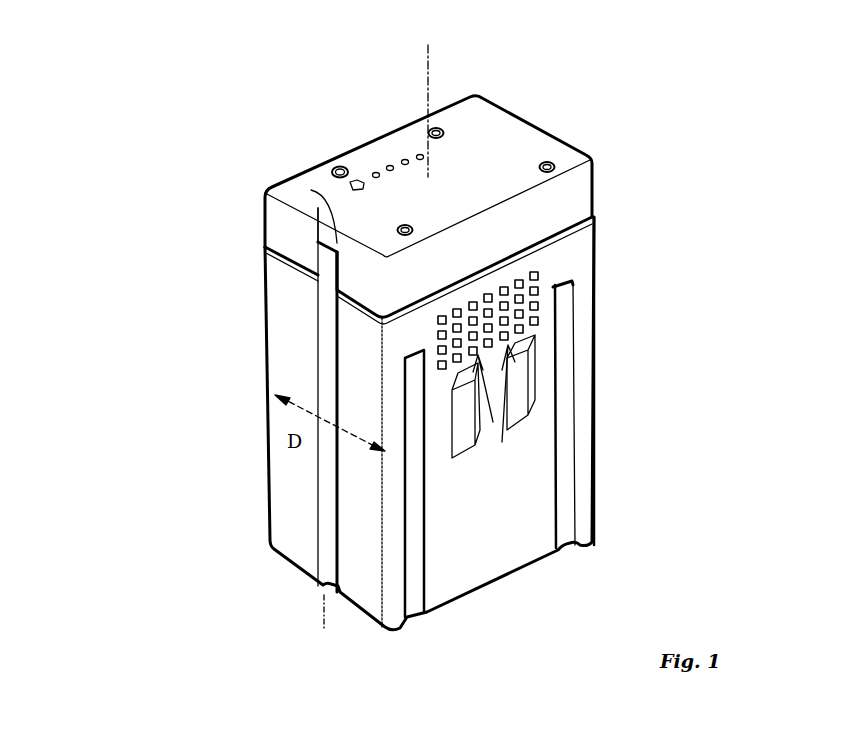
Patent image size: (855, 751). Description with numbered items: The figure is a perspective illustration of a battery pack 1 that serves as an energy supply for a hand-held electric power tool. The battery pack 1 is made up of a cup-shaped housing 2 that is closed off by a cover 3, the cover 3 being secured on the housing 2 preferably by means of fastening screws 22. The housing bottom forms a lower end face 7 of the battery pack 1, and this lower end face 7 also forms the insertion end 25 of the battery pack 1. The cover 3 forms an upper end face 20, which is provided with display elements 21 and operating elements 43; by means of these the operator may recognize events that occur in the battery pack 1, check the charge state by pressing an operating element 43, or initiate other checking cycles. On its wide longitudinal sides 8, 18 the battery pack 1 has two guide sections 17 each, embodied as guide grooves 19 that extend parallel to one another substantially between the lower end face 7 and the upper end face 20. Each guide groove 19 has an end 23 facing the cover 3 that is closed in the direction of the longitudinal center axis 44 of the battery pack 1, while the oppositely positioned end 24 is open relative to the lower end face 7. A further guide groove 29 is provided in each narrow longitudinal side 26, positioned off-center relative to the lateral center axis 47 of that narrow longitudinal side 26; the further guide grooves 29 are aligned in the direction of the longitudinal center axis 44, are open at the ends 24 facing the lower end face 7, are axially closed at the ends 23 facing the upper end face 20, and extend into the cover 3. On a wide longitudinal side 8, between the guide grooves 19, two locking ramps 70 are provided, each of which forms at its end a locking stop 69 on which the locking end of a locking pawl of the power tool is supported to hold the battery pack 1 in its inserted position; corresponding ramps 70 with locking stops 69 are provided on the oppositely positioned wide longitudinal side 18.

The battery pack 1 is at (222, 183).
The housing 2 is at (595, 338).
The cover 3 is at (598, 166).
The lower end face 7 is at (455, 609).
The wide longitudinal side 8 is at (510, 520).
The guide section 17 is at (395, 486).
The wide longitudinal side 18 is at (265, 282).
The guide groove 19 is at (415, 417).
The upper end face 20 is at (502, 143).
The display element 21 is at (395, 150).
The fastening screw 22 is at (337, 166).
The end 23 is at (335, 235).
The end 24 is at (570, 548).
The insertion end 25 is at (282, 576).
The narrow longitudinal side 26 is at (296, 380).
The further guide groove 29 is at (330, 470).
The operating element 43 is at (357, 180).
The longitudinal center axis 44 is at (428, 47).
The lateral center axis 47 is at (325, 627).
The locking stop 69 is at (507, 425).
The locking ramp 70 is at (465, 425).